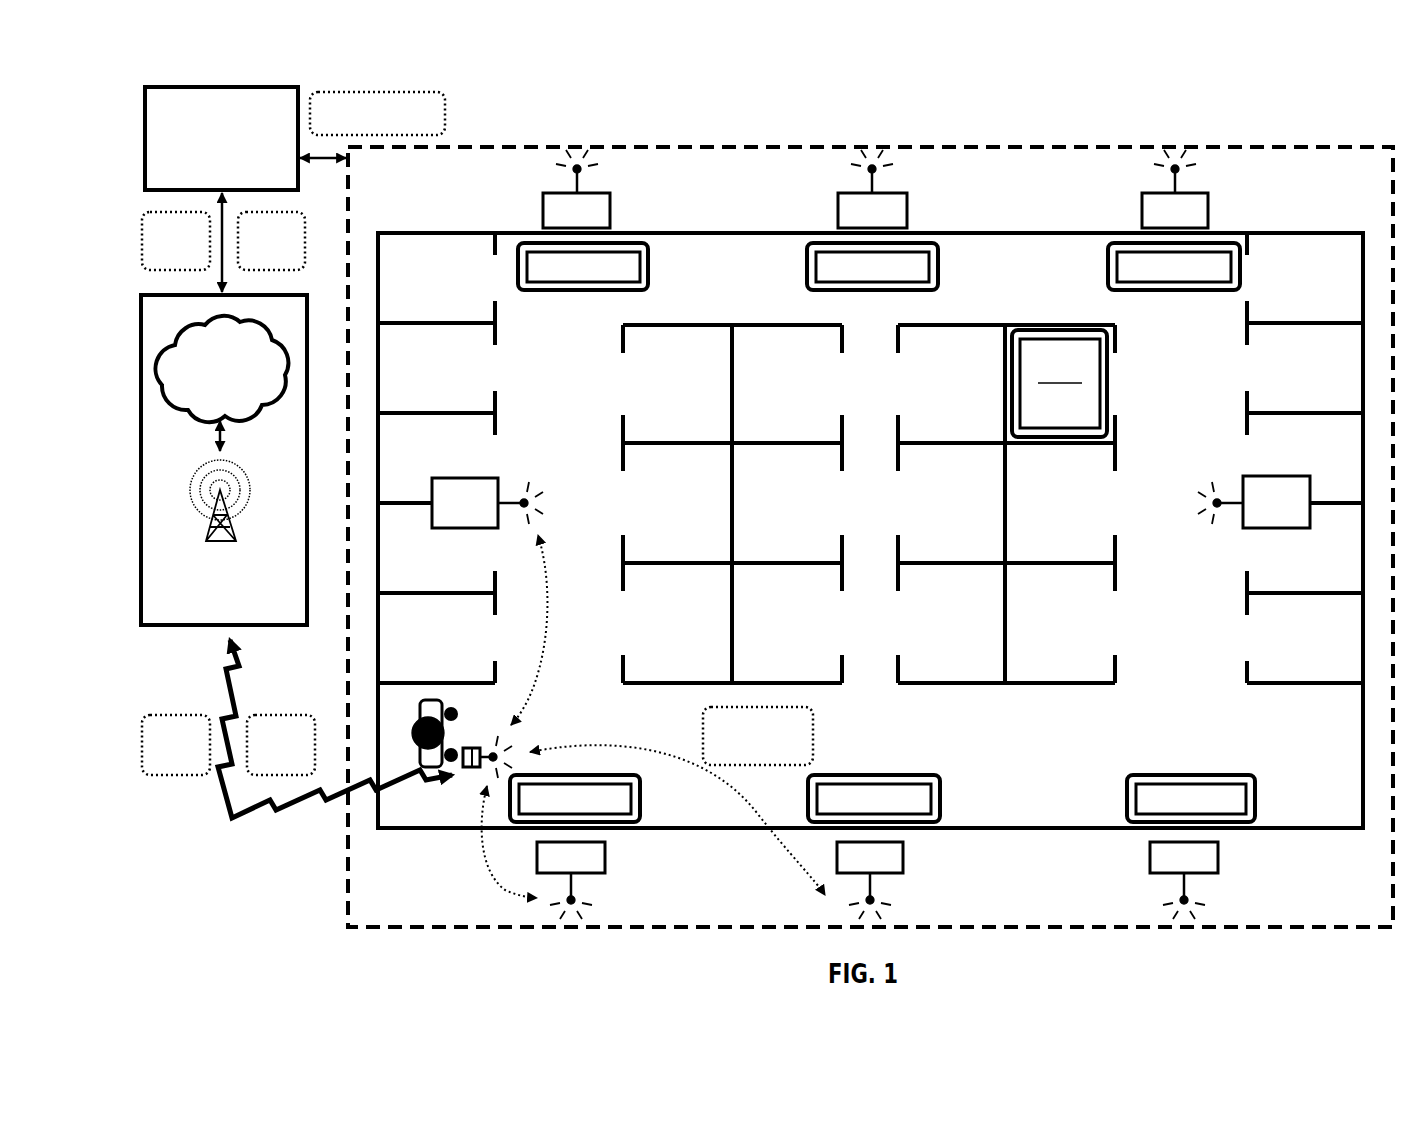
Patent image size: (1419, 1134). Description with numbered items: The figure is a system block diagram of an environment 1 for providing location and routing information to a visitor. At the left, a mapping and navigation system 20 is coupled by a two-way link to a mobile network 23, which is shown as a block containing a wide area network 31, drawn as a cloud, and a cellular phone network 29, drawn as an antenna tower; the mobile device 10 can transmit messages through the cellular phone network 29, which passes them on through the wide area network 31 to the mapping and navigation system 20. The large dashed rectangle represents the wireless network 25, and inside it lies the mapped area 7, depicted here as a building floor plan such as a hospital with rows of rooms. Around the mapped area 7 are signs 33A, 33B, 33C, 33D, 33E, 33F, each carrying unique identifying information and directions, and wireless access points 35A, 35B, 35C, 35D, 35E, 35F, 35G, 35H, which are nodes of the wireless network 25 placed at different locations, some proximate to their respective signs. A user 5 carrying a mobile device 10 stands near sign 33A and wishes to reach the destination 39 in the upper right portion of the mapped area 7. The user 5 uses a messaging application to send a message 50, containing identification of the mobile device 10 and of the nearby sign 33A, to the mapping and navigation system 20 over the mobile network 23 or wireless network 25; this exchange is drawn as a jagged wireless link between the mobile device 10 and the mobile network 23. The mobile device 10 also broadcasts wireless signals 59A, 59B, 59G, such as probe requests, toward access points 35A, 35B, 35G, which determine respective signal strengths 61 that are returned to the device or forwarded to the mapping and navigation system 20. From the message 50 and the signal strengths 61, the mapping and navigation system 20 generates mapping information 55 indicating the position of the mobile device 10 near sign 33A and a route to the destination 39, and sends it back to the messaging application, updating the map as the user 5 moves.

The environment 1 is at (528, 110).
The user 5 is at (415, 751).
The mapped area 7 is at (716, 232).
The mobile device 10 is at (470, 769).
The mapping and navigation system 20 is at (280, 174).
The mobile network 23 is at (291, 615).
The wireless network 25 is at (752, 146).
The cellular phone network 29 is at (235, 531).
The wide area network 31 is at (206, 378).
The sign 33A is at (575, 798).
The sign 33B is at (874, 798).
The sign 33C is at (1191, 798).
The sign 33D is at (583, 266).
The sign 33E is at (872, 266).
The sign 33F is at (1174, 266).
The wireless access point 35A is at (556, 868).
The wireless access point 35B is at (855, 868).
The wireless access point 35C is at (1169, 868).
The wireless access point 35D is at (562, 220).
The wireless access point 35E is at (857, 220).
The wireless access point 35F is at (1160, 220).
The wireless access point 35G is at (450, 512).
The wireless access point 35H is at (1262, 512).
The destination 39 is at (1050, 410).
The message 50 is at (166, 264).
The mapping information 55 is at (261, 264).
The wireless signal 59A is at (512, 882).
The wireless signal 59B is at (757, 813).
The wireless signal 59G is at (547, 633).
The signal strength 61 is at (561, 428).